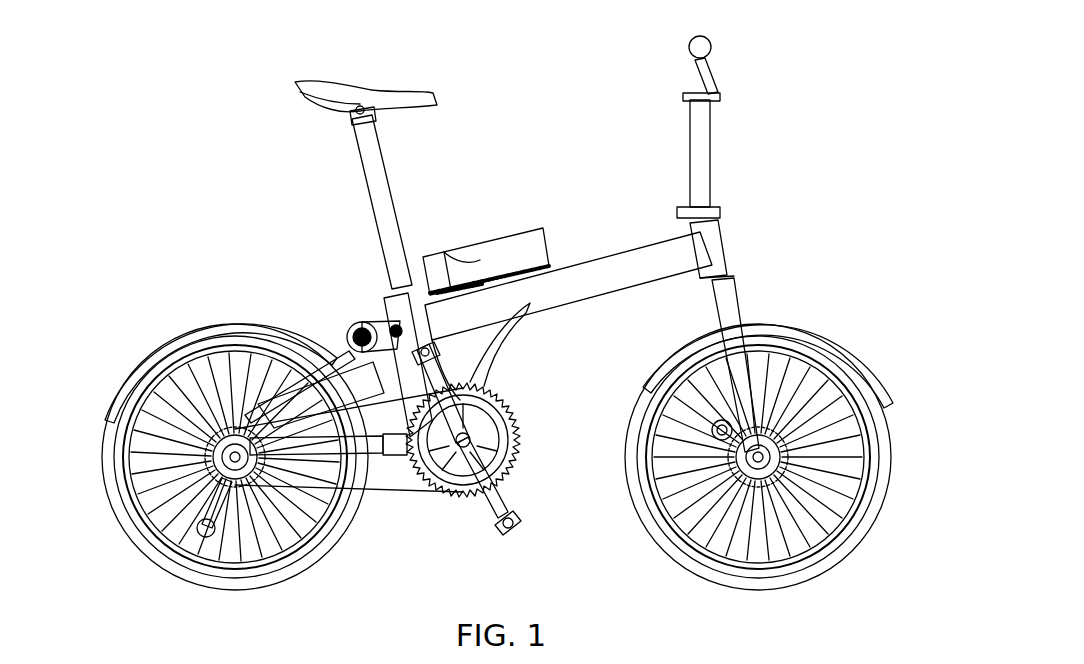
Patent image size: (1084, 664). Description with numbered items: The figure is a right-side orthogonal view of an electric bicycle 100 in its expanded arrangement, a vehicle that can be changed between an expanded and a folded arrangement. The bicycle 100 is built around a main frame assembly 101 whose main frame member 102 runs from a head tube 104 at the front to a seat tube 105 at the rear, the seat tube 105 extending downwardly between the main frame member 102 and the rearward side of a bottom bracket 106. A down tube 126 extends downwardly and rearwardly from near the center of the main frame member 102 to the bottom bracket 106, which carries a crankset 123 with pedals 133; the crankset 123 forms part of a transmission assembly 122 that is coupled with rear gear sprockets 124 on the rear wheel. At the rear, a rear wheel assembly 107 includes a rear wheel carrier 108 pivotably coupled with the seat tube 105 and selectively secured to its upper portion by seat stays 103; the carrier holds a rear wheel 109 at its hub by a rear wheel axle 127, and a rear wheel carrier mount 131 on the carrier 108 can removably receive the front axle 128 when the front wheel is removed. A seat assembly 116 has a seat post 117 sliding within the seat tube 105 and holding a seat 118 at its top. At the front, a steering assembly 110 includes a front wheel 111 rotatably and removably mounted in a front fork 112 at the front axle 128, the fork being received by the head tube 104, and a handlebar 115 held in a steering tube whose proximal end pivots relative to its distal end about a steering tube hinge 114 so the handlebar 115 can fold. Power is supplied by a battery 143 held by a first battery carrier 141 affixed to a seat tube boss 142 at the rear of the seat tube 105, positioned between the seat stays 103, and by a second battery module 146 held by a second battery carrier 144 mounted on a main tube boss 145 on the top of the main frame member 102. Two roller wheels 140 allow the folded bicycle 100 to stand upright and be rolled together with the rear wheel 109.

The electric bicycle 100 is at (868, 211).
The main frame assembly 101 is at (564, 266).
The main frame member 102 is at (623, 270).
The seat stays 103 is at (285, 418).
The head tube 104 is at (714, 254).
The seat tube 105 is at (402, 312).
The bottom bracket 106 is at (467, 462).
The rear wheel assembly 107 is at (259, 262).
The rear wheel carrier 108 is at (345, 503).
The rear wheel 109 is at (211, 448).
The steering assembly 110 is at (754, 113).
The front wheel 111 is at (770, 333).
The front fork 112 is at (722, 313).
The steering tube hinge 114 is at (718, 207).
The handlebar 115 is at (710, 44).
The seat assembly 116 is at (327, 174).
The seat post 117 is at (373, 177).
The seat 118 is at (310, 93).
The transmission assembly 122 is at (513, 467).
The crankset 123 is at (513, 463).
The rear gear sprockets 124 is at (203, 463).
The down tube 126 is at (483, 350).
The rear wheel axle 127 is at (175, 423).
The front axle 128 is at (797, 447).
The rear wheel carrier mount 131 is at (328, 450).
The pedals 133 is at (478, 515).
The roller wheels 140 is at (350, 327).
The first battery carrier 141 is at (377, 367).
The seat tube boss 142 is at (383, 458).
The battery 143 is at (325, 363).
The second battery carrier 144 is at (445, 262).
The main tube boss 145 is at (480, 287).
The second battery module 146 is at (473, 237).